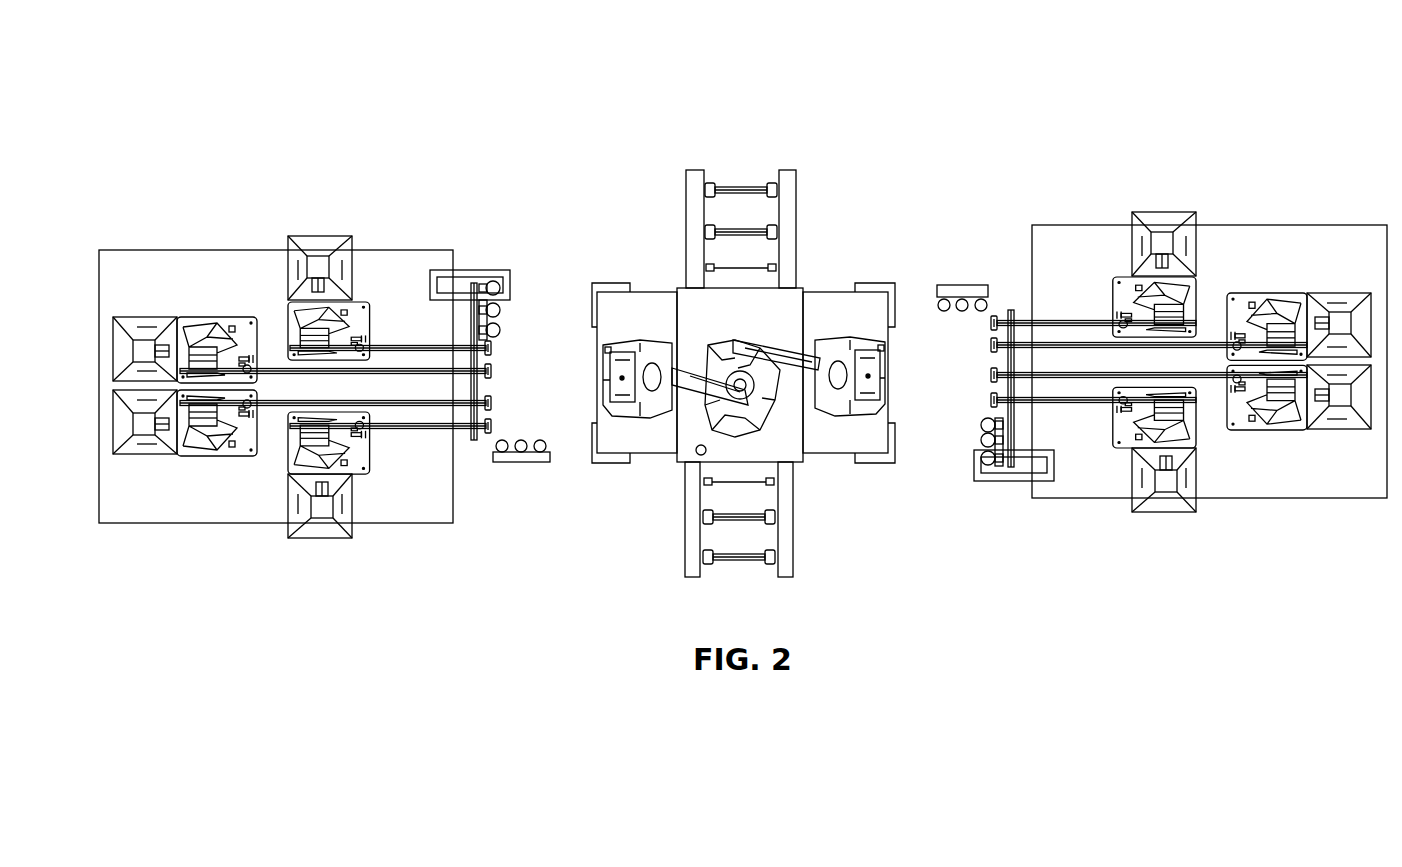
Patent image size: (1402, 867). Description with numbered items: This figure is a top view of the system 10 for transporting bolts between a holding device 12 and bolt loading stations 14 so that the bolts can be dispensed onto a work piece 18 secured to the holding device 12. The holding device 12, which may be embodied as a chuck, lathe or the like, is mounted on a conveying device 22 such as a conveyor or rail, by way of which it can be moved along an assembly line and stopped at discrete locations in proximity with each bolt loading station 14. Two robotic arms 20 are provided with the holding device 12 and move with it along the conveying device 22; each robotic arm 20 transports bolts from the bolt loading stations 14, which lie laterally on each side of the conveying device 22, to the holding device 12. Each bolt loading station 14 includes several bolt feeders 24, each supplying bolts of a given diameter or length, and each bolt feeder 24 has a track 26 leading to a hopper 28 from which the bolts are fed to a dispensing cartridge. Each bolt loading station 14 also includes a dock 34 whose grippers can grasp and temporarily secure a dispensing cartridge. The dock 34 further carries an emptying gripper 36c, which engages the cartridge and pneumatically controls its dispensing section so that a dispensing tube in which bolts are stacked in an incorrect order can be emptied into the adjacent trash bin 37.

The system 10 is at (203, 82).
The holding device 12 is at (822, 476).
The bolt loading station 14 is at (302, 152).
The work piece 18 is at (707, 432).
The robotic arm 20 is at (660, 318).
The conveying device 22 is at (810, 190).
The bolt feeder 24 is at (210, 305).
The track 26 is at (434, 348).
The hopper 28 is at (500, 372).
The dock 34 is at (510, 312).
The emptying gripper 36c is at (500, 290).
The trash bin 37 is at (487, 270).